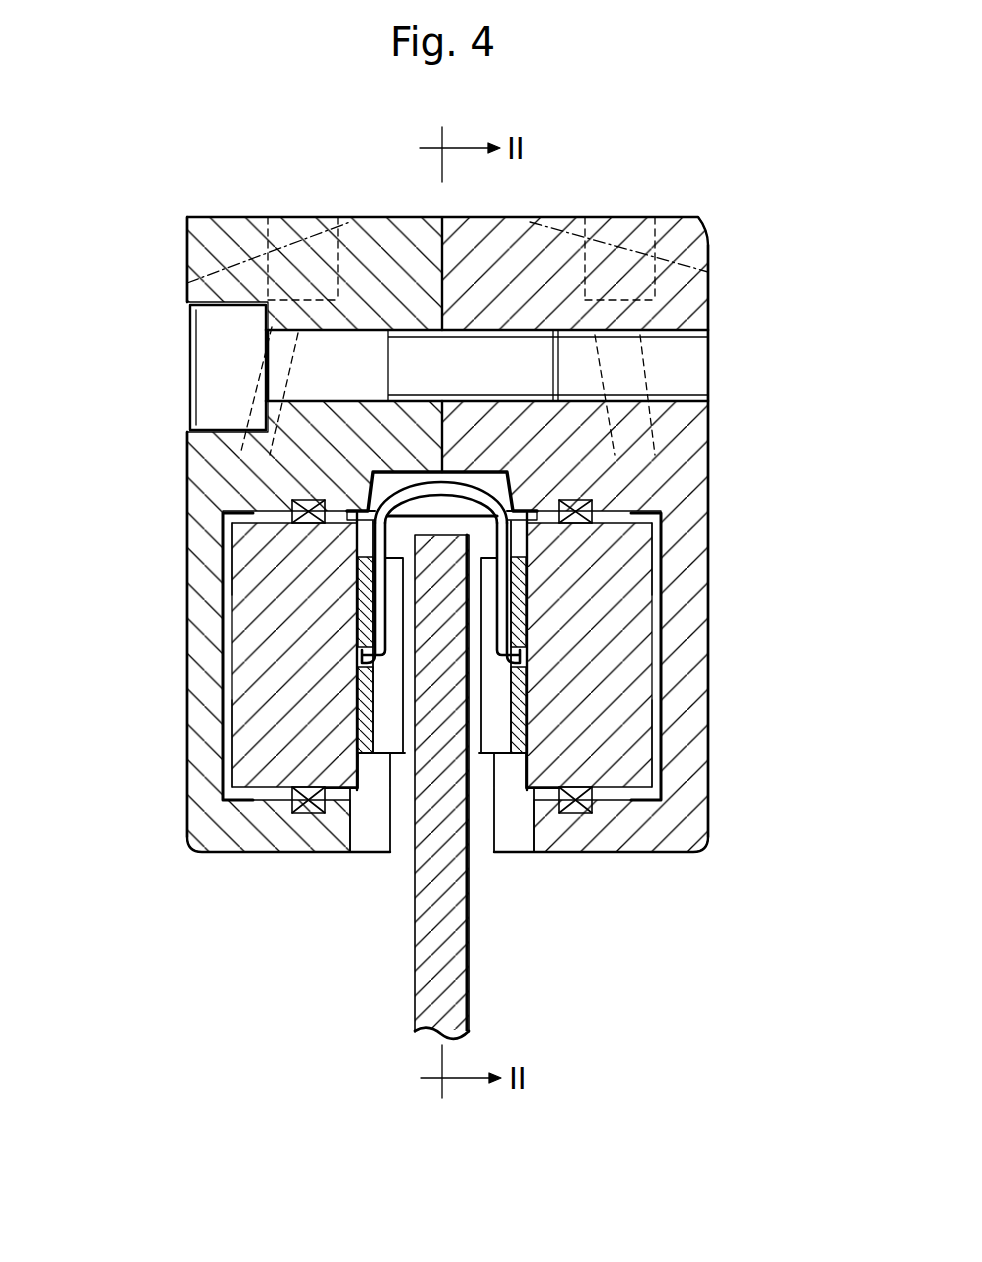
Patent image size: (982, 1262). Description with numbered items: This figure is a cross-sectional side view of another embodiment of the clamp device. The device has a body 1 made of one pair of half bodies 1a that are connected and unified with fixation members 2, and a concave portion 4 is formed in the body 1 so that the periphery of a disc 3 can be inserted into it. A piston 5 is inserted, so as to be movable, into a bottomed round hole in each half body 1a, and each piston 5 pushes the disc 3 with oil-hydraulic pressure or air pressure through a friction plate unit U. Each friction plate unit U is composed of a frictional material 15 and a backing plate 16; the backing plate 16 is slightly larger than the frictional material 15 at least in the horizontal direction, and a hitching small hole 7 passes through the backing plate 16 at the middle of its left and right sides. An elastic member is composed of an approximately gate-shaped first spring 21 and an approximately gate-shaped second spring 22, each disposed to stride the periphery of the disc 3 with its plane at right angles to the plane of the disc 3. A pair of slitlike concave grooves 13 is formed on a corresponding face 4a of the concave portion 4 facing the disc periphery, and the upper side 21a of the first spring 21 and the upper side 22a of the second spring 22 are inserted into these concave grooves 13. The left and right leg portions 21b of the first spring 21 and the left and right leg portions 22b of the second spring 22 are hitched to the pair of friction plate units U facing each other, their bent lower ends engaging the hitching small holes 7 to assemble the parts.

The body 1 is at (576, 215).
The half body 1a is at (195, 214).
The fixation member 2 is at (213, 347).
The disc 3 is at (410, 885).
The concave portion 4 is at (315, 761).
The corresponding face 4a is at (372, 543).
The piston 5 is at (632, 762).
The hitching small hole 7 is at (528, 660).
The concave groove 13 is at (455, 470).
The frictional material 15 is at (380, 750).
The backing plate 16 is at (343, 805).
The first spring 21 is at (440, 545).
The upper side of the first spring 21a is at (605, 440).
The leg portion of the first spring 21b is at (440, 645).
The second spring 22 is at (440, 545).
The upper side of the second spring 22a is at (450, 483).
The leg portion of the second spring 22b is at (522, 600).
The friction plate unit U is at (440, 778).